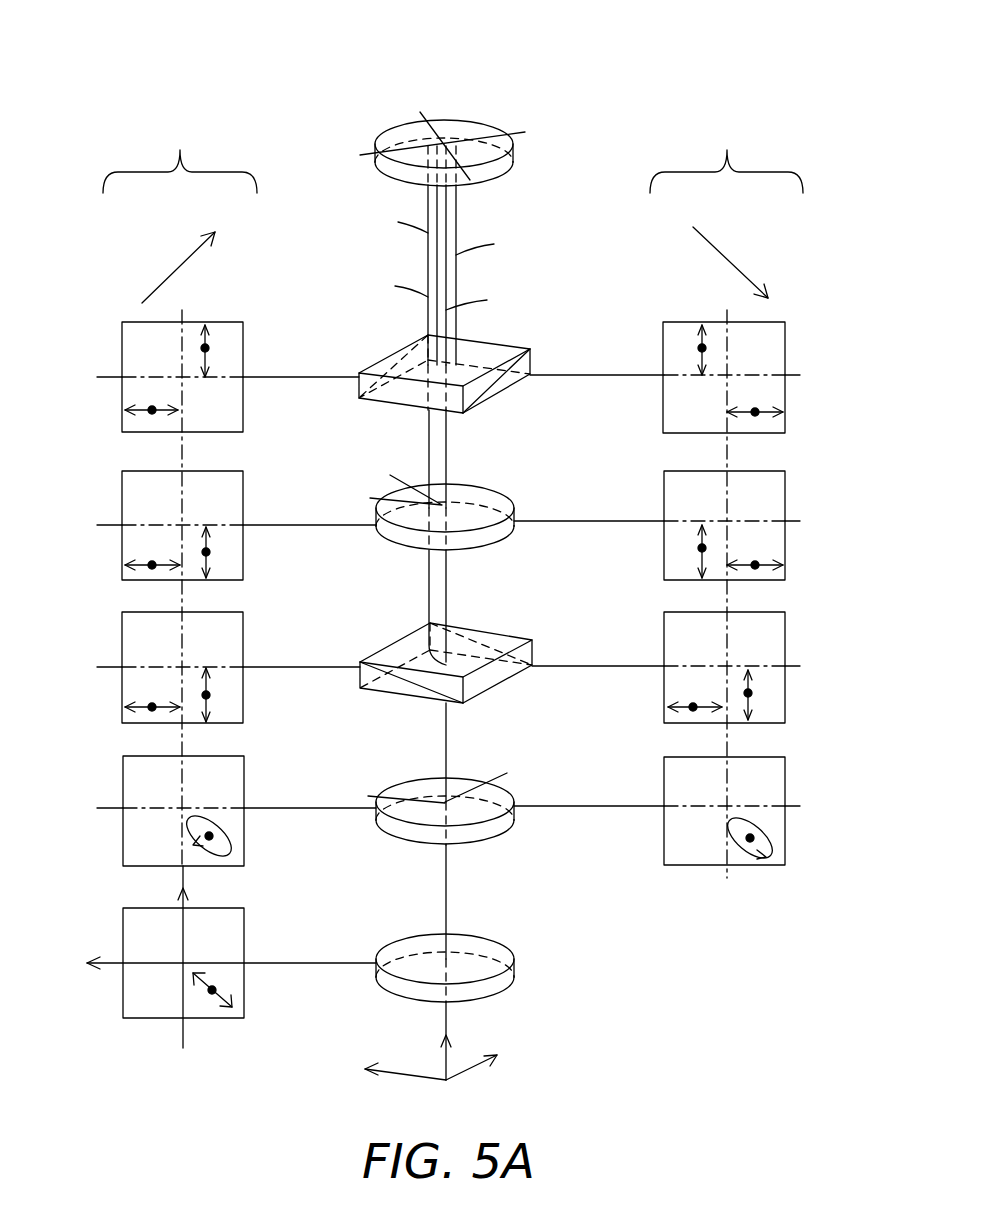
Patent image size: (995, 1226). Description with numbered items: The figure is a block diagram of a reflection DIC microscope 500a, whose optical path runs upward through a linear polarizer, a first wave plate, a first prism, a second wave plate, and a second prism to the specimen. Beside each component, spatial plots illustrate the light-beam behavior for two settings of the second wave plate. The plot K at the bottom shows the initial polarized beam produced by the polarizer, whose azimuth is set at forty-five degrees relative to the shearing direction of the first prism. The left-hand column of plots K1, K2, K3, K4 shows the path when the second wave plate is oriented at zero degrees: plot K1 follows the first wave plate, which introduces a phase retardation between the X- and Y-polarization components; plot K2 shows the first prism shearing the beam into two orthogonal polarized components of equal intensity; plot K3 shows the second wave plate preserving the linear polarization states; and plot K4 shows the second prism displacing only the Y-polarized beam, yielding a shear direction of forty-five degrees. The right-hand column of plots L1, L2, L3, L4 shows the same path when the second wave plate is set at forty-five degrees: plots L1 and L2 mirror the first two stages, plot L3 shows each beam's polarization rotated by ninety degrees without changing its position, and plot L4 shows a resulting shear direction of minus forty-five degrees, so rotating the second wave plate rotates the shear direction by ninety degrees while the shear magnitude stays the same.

The reflection DIC microscope 500a is at (273, 47).
The plot K4 is at (243, 343).
The plot K3 is at (243, 500).
The plot K2 is at (243, 640).
The plot K1 is at (244, 780).
The plot K is at (244, 993).
The plot L4 is at (785, 353).
The plot L3 is at (786, 497).
The plot L2 is at (786, 640).
The plot L1 is at (786, 780).